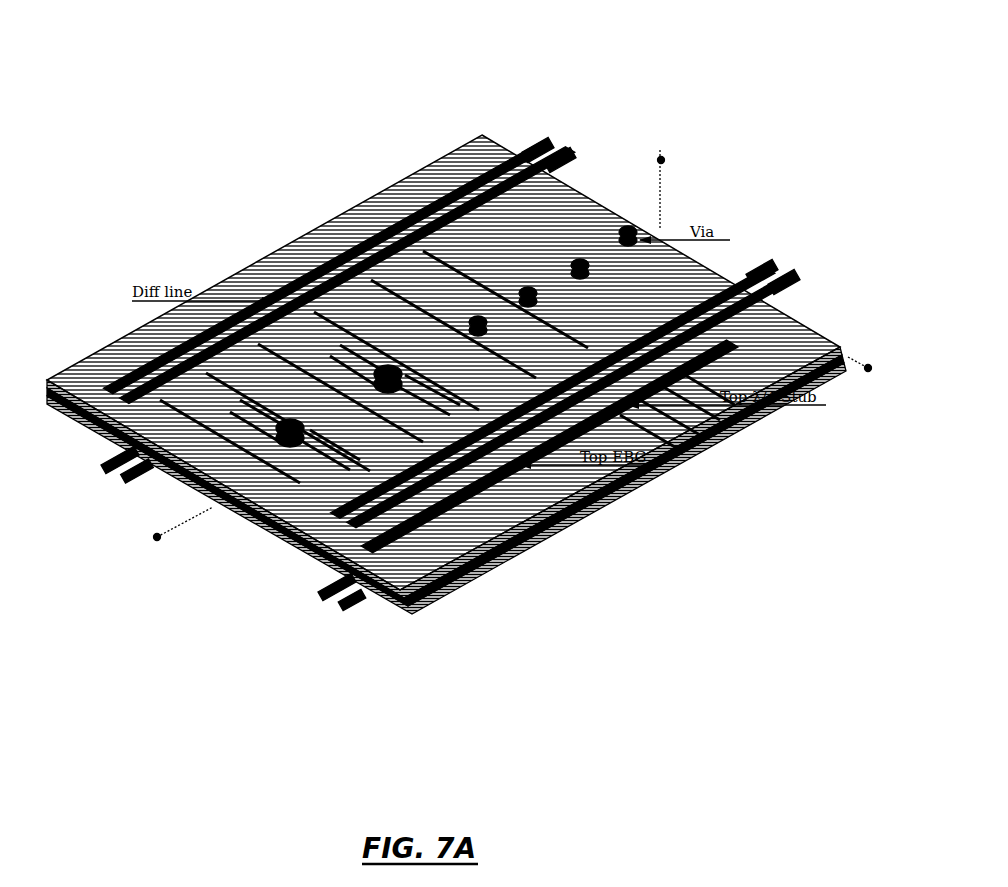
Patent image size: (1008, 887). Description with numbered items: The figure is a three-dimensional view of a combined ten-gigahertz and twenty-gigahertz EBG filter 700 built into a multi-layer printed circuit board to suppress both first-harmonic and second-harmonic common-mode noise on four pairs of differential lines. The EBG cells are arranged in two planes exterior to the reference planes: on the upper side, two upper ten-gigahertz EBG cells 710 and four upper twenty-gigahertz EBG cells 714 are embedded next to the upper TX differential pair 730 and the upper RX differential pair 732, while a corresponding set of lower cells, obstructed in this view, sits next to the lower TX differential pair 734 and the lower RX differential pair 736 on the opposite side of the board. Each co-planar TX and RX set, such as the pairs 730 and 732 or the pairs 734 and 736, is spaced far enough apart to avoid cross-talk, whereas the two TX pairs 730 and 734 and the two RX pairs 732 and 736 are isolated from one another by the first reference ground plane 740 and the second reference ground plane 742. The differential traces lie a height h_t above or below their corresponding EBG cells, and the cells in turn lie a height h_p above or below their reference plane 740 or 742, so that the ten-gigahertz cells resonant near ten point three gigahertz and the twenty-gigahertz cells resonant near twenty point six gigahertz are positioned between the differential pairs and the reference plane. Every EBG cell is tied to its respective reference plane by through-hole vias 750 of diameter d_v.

The 10-GHz EBG filter 700 is at (217, 90).
The upper 10-GHz EBG cells 710 is at (147, 353).
The upper 20-GHz EBG cells 714 is at (713, 380).
The upper pair of differential lines (TX) 730 is at (606, 122).
The upper pair of differential lines (RX) 732 is at (822, 256).
The lower pair of differential lines (TX) 734 is at (100, 480).
The lower pair of differential lines (RX) 736 is at (312, 605).
The reference ground plane Ref 1 740 is at (430, 590).
The reference ground plane Ref 2 742 is at (535, 543).
The through-hole vias 750 is at (450, 157).